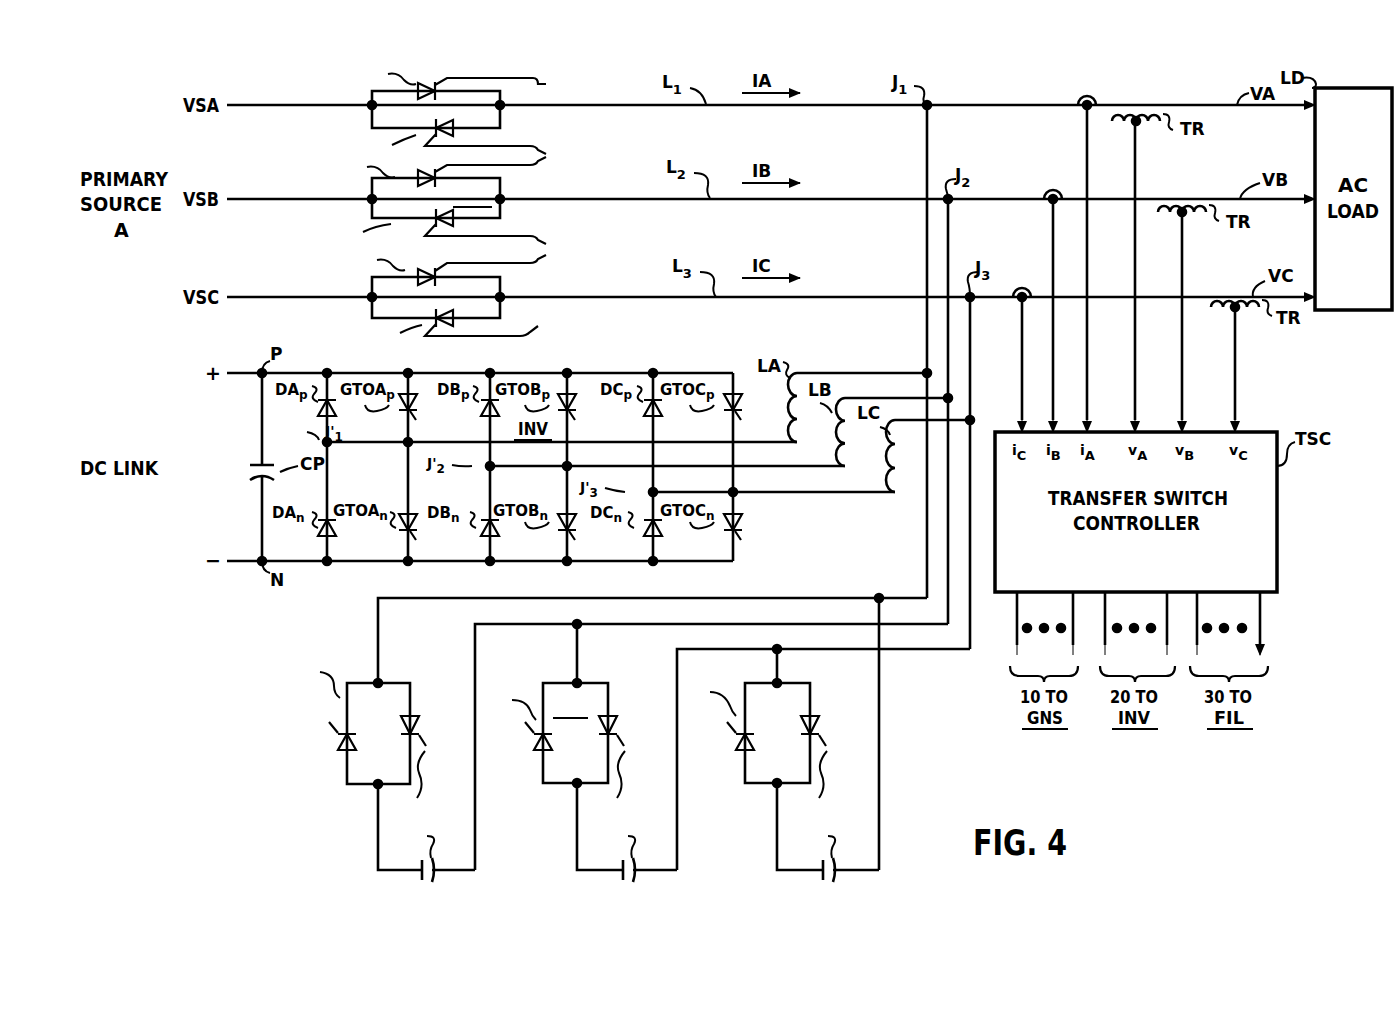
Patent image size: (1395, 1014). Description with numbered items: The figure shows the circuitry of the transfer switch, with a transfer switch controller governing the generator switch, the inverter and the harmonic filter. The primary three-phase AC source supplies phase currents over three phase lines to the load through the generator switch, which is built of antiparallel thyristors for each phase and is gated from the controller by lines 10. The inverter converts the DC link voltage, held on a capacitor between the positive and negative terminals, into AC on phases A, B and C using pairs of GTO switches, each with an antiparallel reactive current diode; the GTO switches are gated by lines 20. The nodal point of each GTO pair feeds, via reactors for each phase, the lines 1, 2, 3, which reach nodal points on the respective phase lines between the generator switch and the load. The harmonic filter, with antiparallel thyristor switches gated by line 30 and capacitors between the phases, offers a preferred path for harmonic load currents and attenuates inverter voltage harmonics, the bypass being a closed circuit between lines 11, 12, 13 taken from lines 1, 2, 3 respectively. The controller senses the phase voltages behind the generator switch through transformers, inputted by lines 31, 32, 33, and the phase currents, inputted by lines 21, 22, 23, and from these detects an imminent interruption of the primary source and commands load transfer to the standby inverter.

The line 1 is at (888, 373).
The line 2 is at (862, 398).
The line 3 is at (912, 420).
The gating lines 10 is at (437, 205).
The line 11 is at (922, 598).
The line 12 is at (930, 623).
The line 13 is at (930, 649).
The gating lines 20 is at (416, 420).
The current input line 21 is at (1086, 372).
The current input line 22 is at (1052, 372).
The current input line 23 is at (1020, 375).
The gating line 30 is at (329, 722).
The voltage input line 31 is at (1134, 375).
The voltage input line 32 is at (1180, 373).
The voltage input line 33 is at (1234, 373).